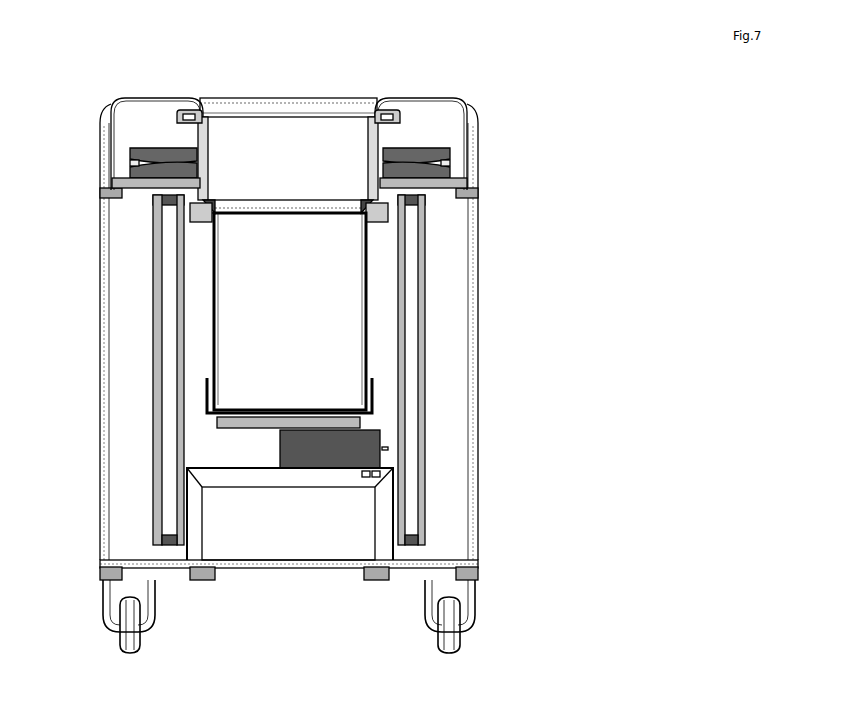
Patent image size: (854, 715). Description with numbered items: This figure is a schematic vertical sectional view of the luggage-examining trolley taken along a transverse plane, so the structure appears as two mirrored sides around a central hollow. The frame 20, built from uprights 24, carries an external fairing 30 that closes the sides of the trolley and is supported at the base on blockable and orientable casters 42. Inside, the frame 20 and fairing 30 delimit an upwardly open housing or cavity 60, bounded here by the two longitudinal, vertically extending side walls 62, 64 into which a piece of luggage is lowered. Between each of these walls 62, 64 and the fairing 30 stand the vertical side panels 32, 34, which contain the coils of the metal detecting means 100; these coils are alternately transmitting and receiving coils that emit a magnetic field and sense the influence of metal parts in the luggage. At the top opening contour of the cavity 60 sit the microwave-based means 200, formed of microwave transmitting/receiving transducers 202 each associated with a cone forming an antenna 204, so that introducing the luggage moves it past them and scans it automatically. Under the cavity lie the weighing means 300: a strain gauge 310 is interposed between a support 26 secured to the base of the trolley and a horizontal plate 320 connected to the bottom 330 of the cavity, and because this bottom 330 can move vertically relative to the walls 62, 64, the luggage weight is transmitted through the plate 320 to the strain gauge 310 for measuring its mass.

The frame 20 is at (284, 342).
The uprights 24 is at (110, 315).
The support 26 is at (243, 487).
The fairing 30 is at (460, 103).
The vertical side panel 32 is at (425, 340).
The vertical side panel 34 is at (153, 440).
The caster 42 is at (112, 645).
The housing or cavity 60 is at (359, 313).
The side wall 62 is at (368, 243).
The side wall 64 is at (218, 226).
The metal detecting means 100 is at (167, 368).
The microwave-based means 200 is at (421, 137).
The microwave transmitting/receiving means 202 is at (135, 163).
The cone antenna 204 is at (165, 150).
The weighing means 300 is at (287, 441).
The strain gauge 310 is at (370, 460).
The horizontal plate 320 is at (367, 421).
The bottom of the cavity 330 is at (363, 410).